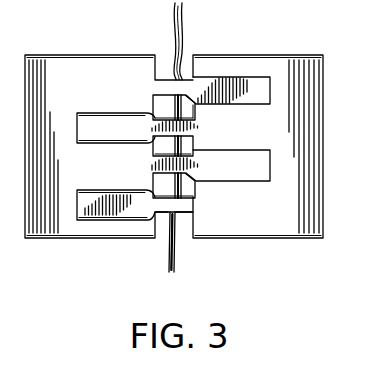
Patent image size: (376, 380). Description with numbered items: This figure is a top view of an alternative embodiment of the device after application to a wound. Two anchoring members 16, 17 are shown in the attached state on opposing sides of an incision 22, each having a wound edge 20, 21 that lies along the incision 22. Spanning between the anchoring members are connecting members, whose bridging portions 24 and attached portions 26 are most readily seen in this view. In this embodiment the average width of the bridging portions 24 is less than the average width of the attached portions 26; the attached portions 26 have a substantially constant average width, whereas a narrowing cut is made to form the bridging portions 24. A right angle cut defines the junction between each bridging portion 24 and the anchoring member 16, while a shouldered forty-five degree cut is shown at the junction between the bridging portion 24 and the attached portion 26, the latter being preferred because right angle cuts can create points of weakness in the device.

The anchoring member 16 is at (75, 62).
The anchoring member 17 is at (273, 230).
The wound edge 20 is at (158, 226).
The wound edge 21 is at (187, 228).
The incision 22 is at (168, 268).
The bridging portion 24 is at (165, 83).
The attached portion 26 is at (262, 93).